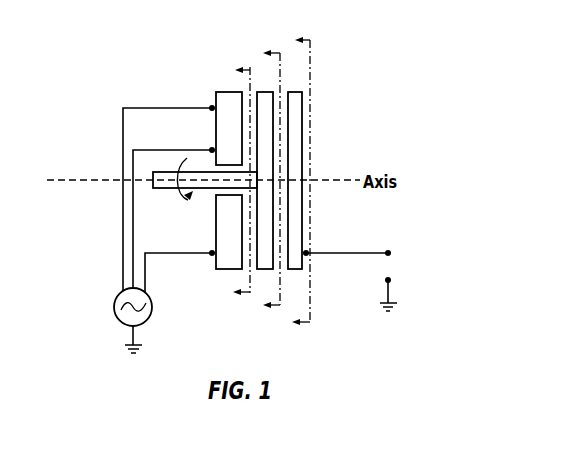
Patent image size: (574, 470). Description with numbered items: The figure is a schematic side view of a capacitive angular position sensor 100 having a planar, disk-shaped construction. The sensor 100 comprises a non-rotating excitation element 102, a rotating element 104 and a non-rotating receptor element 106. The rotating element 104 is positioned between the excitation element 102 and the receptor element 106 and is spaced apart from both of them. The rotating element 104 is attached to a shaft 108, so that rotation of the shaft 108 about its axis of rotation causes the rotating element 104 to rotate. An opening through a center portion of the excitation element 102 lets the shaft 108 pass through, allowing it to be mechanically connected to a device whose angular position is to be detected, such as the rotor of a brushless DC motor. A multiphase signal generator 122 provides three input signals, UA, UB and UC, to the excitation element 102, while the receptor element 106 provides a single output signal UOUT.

The angular position sensor 100 is at (347, 51).
The non-rotating excitation element 102 is at (215, 206).
The rotating element 104 is at (273, 253).
The non-rotating receptor element 106 is at (303, 233).
The shaft 108 is at (170, 172).
The multiphase signal generator 122 is at (113, 307).